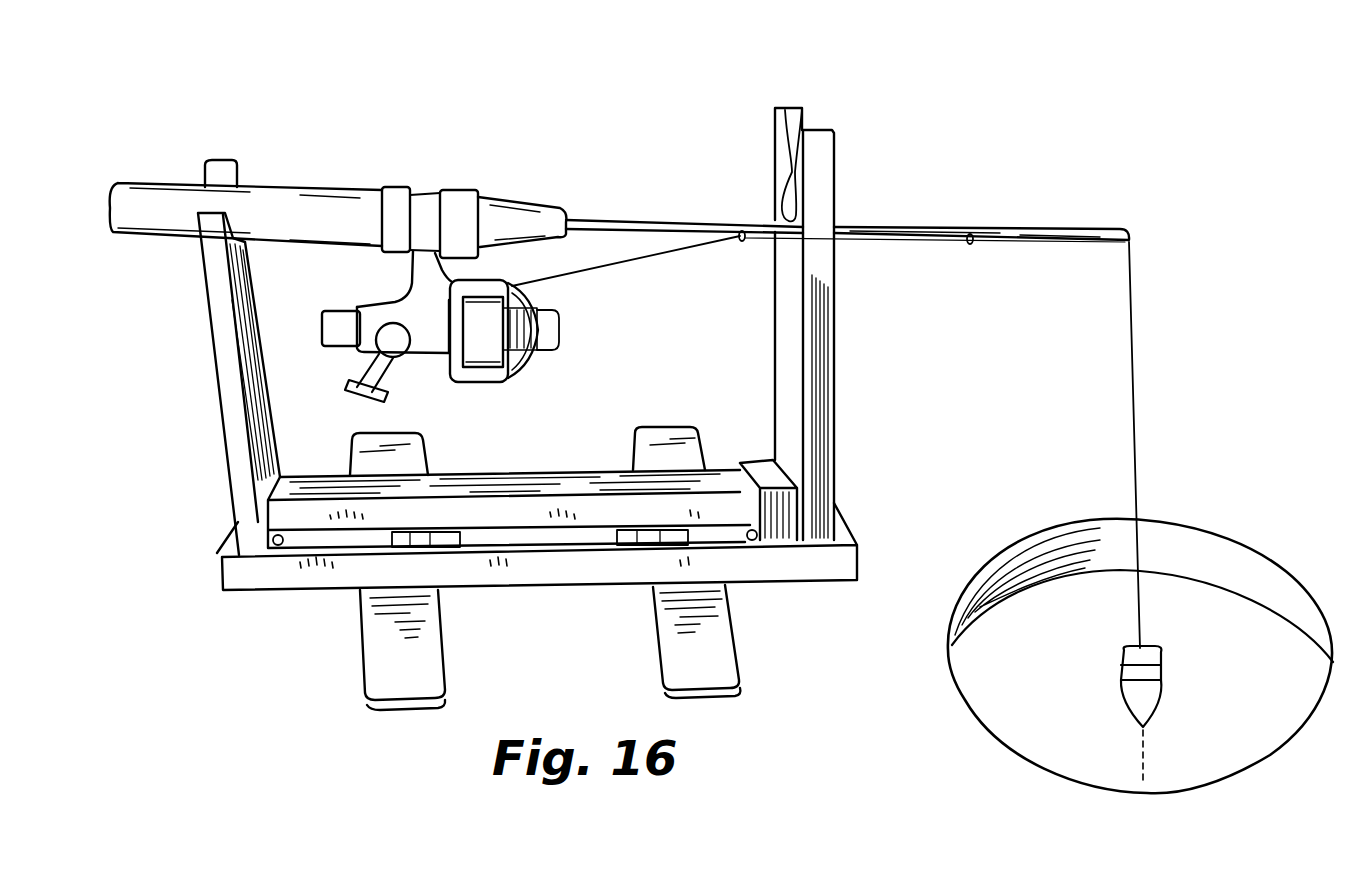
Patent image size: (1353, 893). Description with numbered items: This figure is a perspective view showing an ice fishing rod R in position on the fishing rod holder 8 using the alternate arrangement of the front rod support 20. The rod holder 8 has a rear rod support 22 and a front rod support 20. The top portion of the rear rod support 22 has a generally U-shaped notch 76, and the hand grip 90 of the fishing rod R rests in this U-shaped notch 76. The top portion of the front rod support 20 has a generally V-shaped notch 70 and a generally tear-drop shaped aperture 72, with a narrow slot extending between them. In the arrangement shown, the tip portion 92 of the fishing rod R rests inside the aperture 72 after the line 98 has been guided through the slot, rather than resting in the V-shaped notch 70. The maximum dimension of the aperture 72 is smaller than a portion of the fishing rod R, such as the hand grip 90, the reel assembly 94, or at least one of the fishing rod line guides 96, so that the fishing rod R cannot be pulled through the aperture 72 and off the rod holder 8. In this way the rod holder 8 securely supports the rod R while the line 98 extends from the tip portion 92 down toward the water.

The fishing rod holder 8 is at (892, 468).
The front rod support 20 is at (836, 393).
The rear rod support 22 is at (228, 386).
The V-shaped notch 70 is at (868, 128).
The tear-drop shaped aperture 72 is at (748, 198).
The U-shaped notch 76 is at (166, 156).
The hand grip 90 is at (323, 190).
The tip portion 92 is at (946, 224).
The reel assembly 94 is at (490, 380).
The fishing rod line guides 96 is at (740, 246).
The line 98 is at (873, 245).
The fishing rod R is at (478, 148).